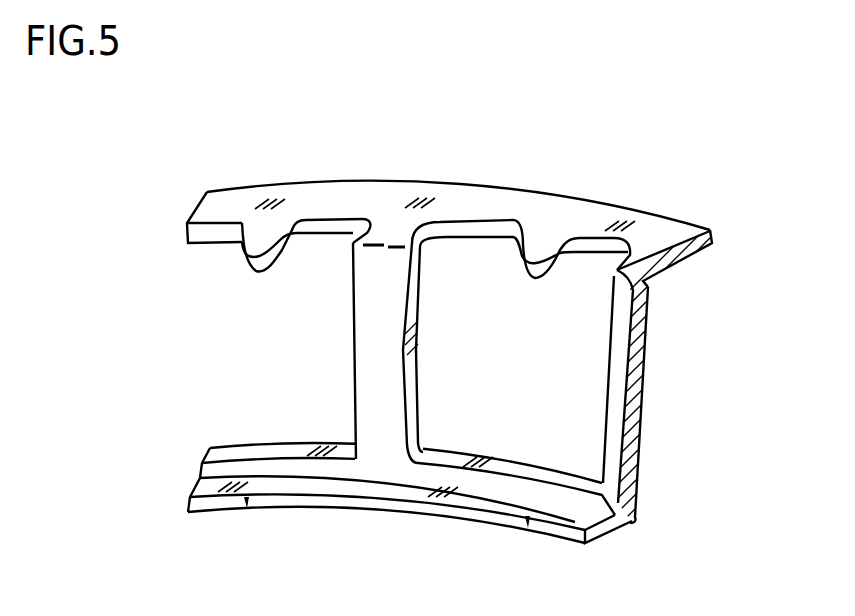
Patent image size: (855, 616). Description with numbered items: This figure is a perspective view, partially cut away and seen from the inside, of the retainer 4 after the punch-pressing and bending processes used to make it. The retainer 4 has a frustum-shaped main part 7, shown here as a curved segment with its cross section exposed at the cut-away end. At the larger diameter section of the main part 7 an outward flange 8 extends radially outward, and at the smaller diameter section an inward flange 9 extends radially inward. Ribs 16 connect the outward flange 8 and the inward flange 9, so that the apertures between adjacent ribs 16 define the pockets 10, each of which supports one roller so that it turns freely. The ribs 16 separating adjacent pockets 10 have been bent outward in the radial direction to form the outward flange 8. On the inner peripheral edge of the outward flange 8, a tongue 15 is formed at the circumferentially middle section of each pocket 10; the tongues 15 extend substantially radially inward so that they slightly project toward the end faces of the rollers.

The retainer 4 is at (452, 178).
The main part 7 is at (650, 332).
The outward flange 8 is at (667, 228).
The inward flange 9 is at (508, 503).
The pocket 10 is at (589, 243).
The tongue 15 is at (266, 252).
The rib 16 is at (353, 332).